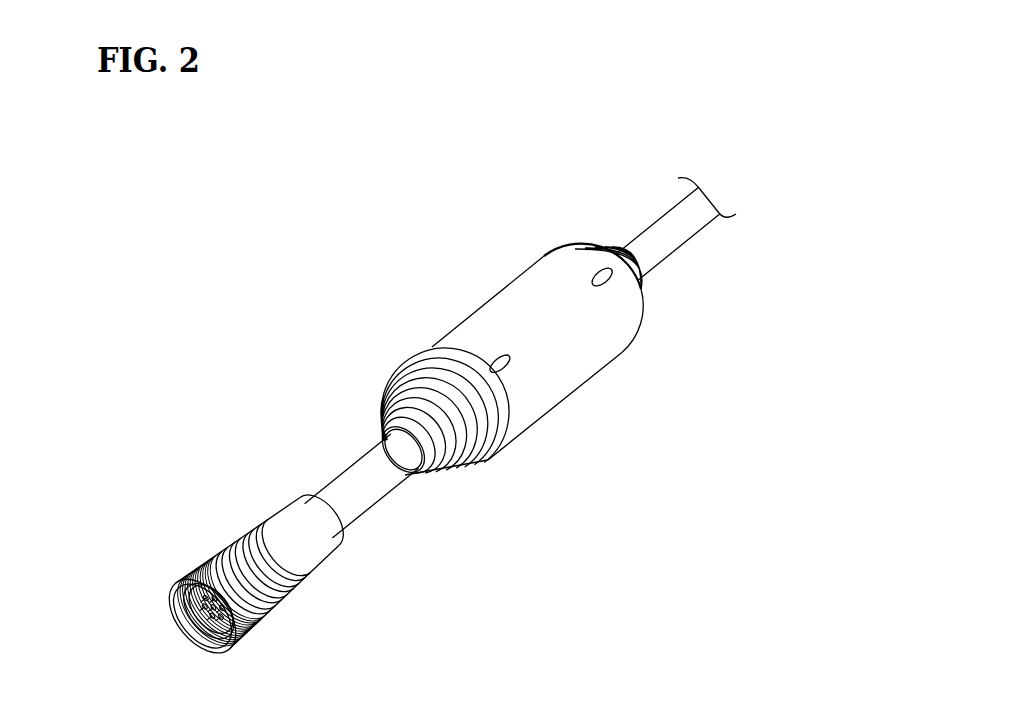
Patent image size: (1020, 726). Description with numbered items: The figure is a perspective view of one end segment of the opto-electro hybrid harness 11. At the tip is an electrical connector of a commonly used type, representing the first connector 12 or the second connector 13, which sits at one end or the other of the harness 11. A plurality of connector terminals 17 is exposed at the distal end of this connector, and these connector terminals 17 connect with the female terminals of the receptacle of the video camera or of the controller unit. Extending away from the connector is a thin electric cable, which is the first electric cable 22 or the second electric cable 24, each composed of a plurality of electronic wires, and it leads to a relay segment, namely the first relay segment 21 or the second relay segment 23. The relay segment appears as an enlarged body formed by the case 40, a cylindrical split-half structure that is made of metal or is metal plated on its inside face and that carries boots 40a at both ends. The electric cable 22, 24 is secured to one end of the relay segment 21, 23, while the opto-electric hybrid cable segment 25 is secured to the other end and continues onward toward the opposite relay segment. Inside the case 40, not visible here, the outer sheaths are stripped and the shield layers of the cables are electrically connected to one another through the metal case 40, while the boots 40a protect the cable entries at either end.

The opto-electro hybrid harness 11 is at (443, 237).
The first connector 12 is at (255, 565).
The second connector 13 is at (255, 565).
The connector terminals 17 is at (200, 627).
The first relay segment 21 is at (502, 347).
The first electric cable 22 is at (354, 450).
The second relay segment 23 is at (435, 338).
The second electric cable 24 is at (348, 468).
The opto-electric hybrid cable segment 25 is at (653, 224).
The case 40 is at (560, 385).
The boots 40a is at (648, 288).